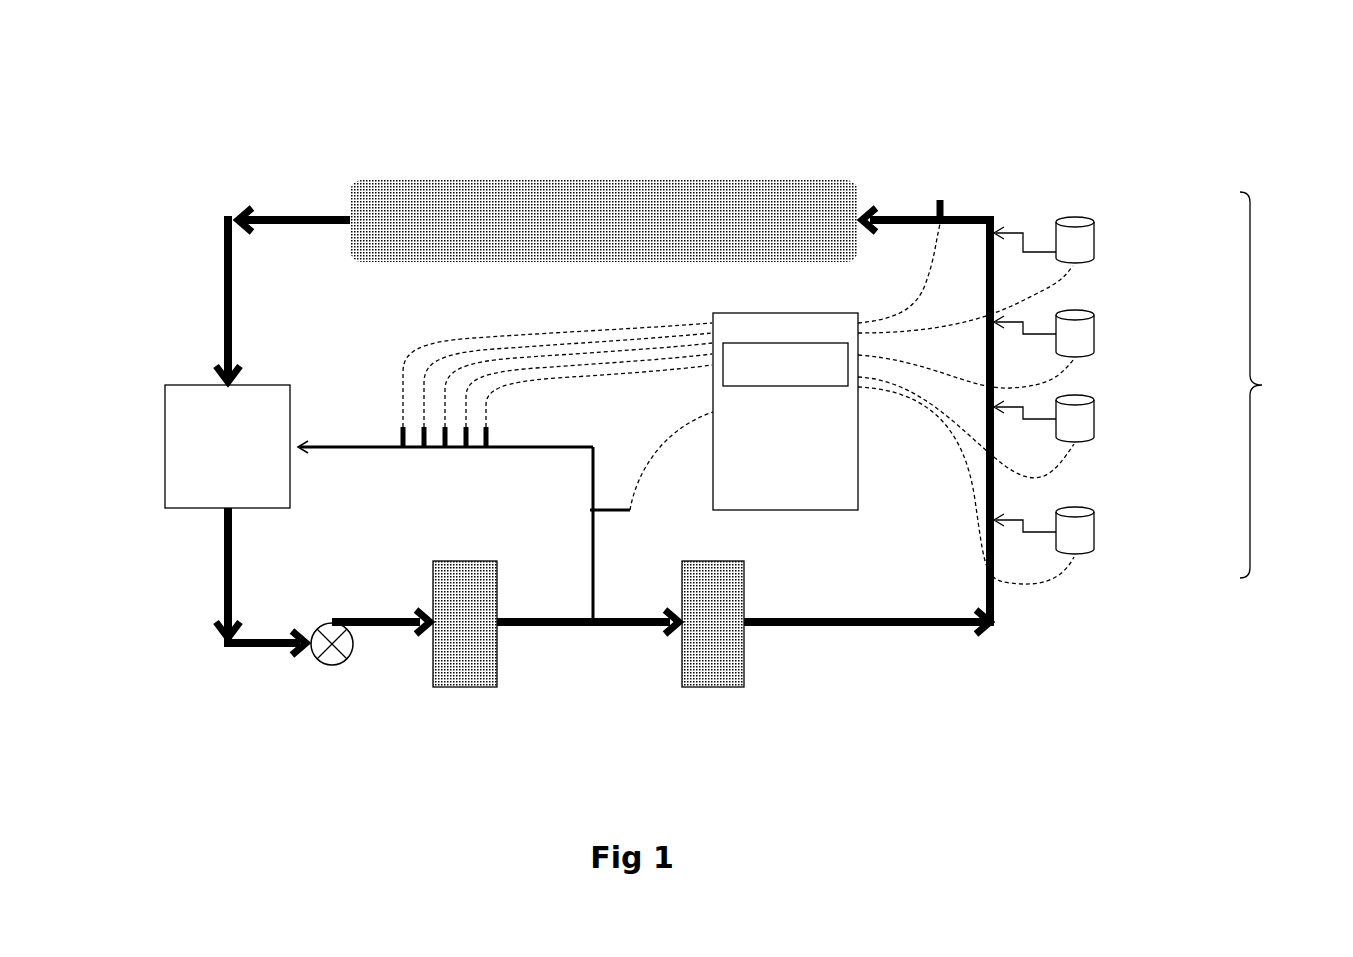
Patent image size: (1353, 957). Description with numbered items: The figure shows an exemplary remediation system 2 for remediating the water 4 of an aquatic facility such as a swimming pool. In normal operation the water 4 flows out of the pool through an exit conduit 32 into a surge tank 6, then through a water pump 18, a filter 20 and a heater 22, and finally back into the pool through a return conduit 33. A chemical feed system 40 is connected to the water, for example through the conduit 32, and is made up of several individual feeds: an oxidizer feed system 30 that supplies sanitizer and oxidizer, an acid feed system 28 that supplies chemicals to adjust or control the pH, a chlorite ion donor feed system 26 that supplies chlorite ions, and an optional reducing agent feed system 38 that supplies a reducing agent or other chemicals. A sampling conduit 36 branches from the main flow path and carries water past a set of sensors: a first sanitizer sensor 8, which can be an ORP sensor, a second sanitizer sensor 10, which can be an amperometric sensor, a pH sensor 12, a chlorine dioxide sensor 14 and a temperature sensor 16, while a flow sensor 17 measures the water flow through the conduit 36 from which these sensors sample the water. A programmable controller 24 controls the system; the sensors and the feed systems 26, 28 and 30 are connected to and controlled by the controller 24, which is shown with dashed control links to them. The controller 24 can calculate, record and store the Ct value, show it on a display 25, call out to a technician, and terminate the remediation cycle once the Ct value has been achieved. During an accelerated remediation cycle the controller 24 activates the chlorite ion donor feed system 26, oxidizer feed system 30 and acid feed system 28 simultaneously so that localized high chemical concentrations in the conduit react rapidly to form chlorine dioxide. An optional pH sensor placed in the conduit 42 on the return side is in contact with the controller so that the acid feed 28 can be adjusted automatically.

The remediation system 2 is at (942, 101).
The water 4 is at (570, 178).
The surge tank 6 is at (227, 446).
The first sanitizer sensor 8 is at (397, 452).
The second sanitizer sensor 10 is at (421, 452).
The pH sensor 12 is at (446, 452).
The chlorine dioxide sensor 14 is at (467, 452).
The temperature sensor 16 is at (492, 452).
The flow sensor 17 is at (620, 513).
The water pump 18 is at (332, 665).
The filter 20 is at (465, 624).
The heater 22 is at (713, 624).
The programmable controller 24 is at (785, 411).
The display 25 is at (785, 364).
The chlorite ion donor feed system 26 is at (1132, 548).
The acid feed system 28 is at (1117, 428).
The oxidizer feed system 30 is at (1117, 344).
The exit conduit 32 is at (223, 323).
The return conduit 33 is at (817, 627).
The conduit 36 is at (590, 600).
The reducing agent feed system 38 is at (1127, 246).
The chemical feed system 40 is at (1262, 385).
The conduit with pH sensor 42 is at (958, 189).